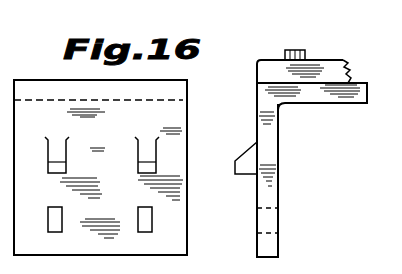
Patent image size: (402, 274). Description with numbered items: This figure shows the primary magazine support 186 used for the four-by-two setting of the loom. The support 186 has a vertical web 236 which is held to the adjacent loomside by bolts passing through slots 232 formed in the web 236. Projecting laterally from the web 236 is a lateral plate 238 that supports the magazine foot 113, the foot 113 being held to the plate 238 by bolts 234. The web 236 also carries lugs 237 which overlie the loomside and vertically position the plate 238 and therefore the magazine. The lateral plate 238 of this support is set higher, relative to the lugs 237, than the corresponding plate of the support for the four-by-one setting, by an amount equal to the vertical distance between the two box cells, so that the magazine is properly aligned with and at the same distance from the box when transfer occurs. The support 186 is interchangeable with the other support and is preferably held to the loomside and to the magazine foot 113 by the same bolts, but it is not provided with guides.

The magazine foot 113 is at (338, 62).
The magazine support 186 is at (180, 120).
The slots 232 is at (143, 232).
The bolts 234 is at (297, 52).
The web 236 is at (187, 235).
The lugs 237 is at (147, 153).
The lateral plate 238 is at (328, 100).